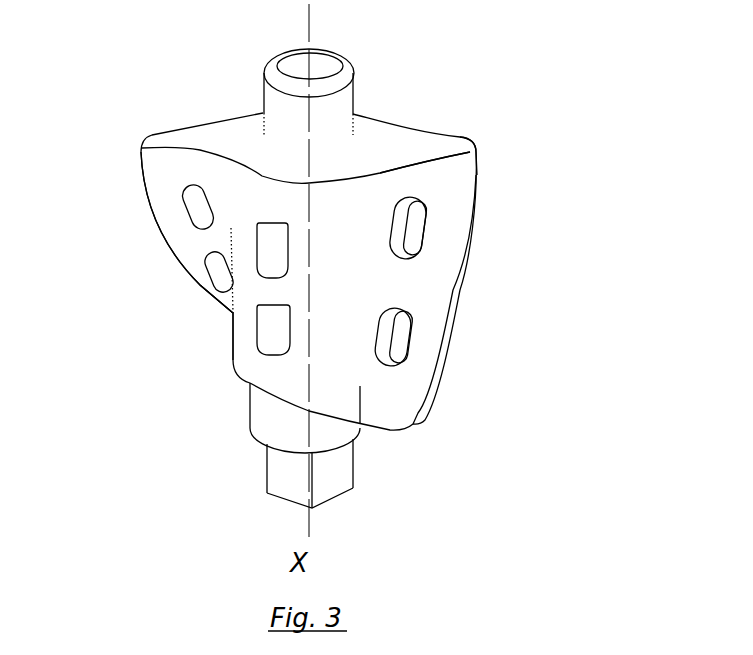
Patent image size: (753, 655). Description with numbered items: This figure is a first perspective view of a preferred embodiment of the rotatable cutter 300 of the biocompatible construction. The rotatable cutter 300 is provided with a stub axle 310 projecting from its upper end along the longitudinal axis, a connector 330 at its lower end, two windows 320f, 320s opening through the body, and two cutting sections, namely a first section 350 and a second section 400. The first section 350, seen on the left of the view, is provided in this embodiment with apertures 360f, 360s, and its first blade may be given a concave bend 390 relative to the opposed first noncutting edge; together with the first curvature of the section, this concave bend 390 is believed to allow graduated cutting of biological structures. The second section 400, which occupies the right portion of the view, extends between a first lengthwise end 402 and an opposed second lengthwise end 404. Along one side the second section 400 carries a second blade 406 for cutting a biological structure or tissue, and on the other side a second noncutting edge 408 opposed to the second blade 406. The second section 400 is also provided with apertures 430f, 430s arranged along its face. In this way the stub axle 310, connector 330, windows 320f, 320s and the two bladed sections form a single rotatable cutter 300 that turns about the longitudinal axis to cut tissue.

The rotatable cutter 300 is at (200, 98).
The stub axle 310 is at (345, 62).
The window 320f is at (263, 278).
The window 320s is at (263, 353).
The connector 330 is at (347, 495).
The first section 350 is at (190, 239).
The aperture 360f is at (182, 188).
The aperture 360s is at (210, 268).
The concave bend 390 is at (210, 298).
The second section 400 is at (428, 286).
The first lengthwise end 402 is at (478, 155).
The second lengthwise end 404 is at (425, 422).
The second blade 406 is at (447, 382).
The second noncutting edge 408 is at (455, 183).
The aperture 430f is at (430, 232).
The aperture 430s is at (405, 345).